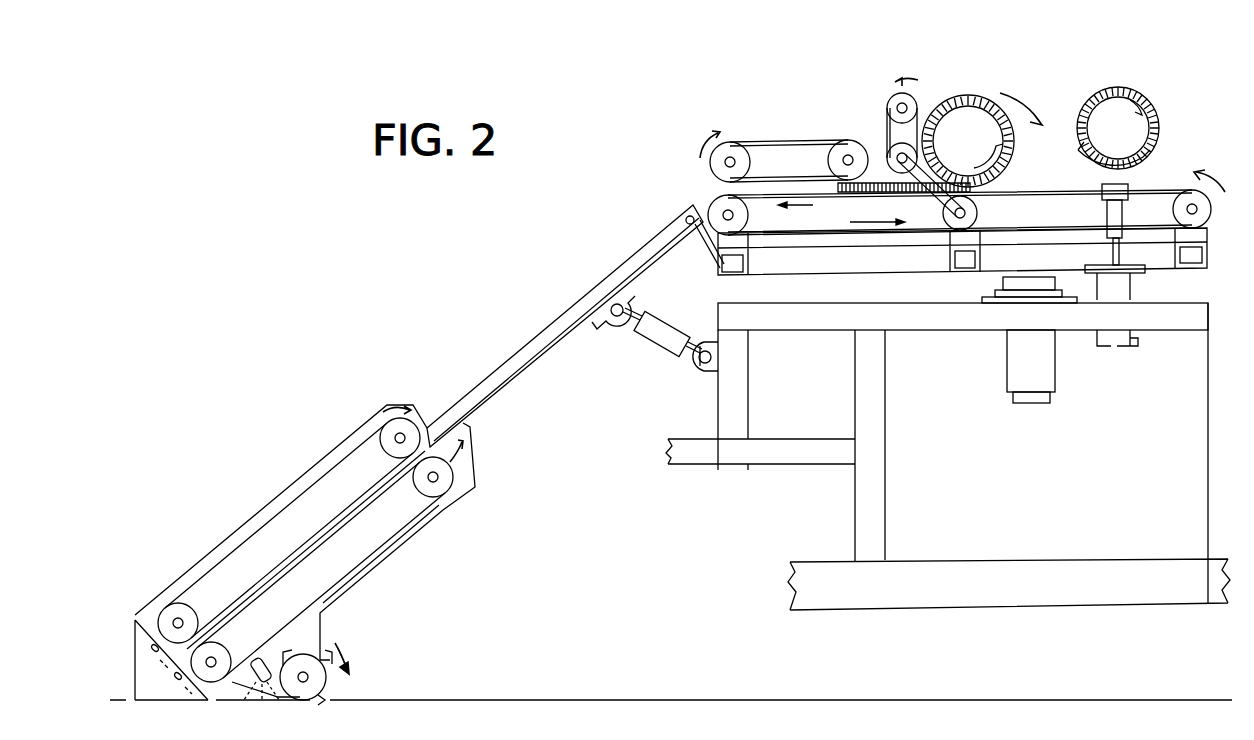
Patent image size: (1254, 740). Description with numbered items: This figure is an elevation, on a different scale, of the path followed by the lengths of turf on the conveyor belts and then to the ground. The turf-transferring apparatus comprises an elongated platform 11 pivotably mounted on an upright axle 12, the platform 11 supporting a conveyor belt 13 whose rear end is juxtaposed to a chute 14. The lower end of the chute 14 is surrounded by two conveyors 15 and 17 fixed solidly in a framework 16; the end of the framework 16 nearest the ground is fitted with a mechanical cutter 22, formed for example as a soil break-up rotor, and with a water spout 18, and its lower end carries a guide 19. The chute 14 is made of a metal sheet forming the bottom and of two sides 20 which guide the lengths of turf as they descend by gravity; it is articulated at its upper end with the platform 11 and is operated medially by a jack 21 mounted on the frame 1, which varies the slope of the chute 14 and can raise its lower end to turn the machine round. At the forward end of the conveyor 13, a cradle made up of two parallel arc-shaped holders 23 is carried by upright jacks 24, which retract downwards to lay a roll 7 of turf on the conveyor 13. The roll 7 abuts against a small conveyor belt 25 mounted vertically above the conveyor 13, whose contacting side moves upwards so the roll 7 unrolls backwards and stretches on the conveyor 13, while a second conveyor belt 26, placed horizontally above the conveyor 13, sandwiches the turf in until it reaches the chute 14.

The longitudinal frame 1 is at (738, 395).
The roll of turf 7 is at (961, 96).
The elongated platform 11 is at (866, 262).
The upright axle 12 is at (1003, 286).
The conveyor belt 13 is at (1048, 190).
The chute 14 is at (559, 264).
The conveyor 15 is at (302, 493).
The framework 16 is at (451, 508).
The conveyor 17 is at (378, 550).
The water spout 18 is at (263, 657).
The guide 19 is at (121, 676).
The sides 20 is at (510, 368).
The jack 21 is at (660, 334).
The mechanical cutter 22 is at (327, 683).
The arc-shaped holders 23 is at (1145, 168).
The upright jacks 24 is at (1110, 214).
The small conveyor belt 25 is at (886, 128).
The second conveyor belt 26 is at (771, 140).